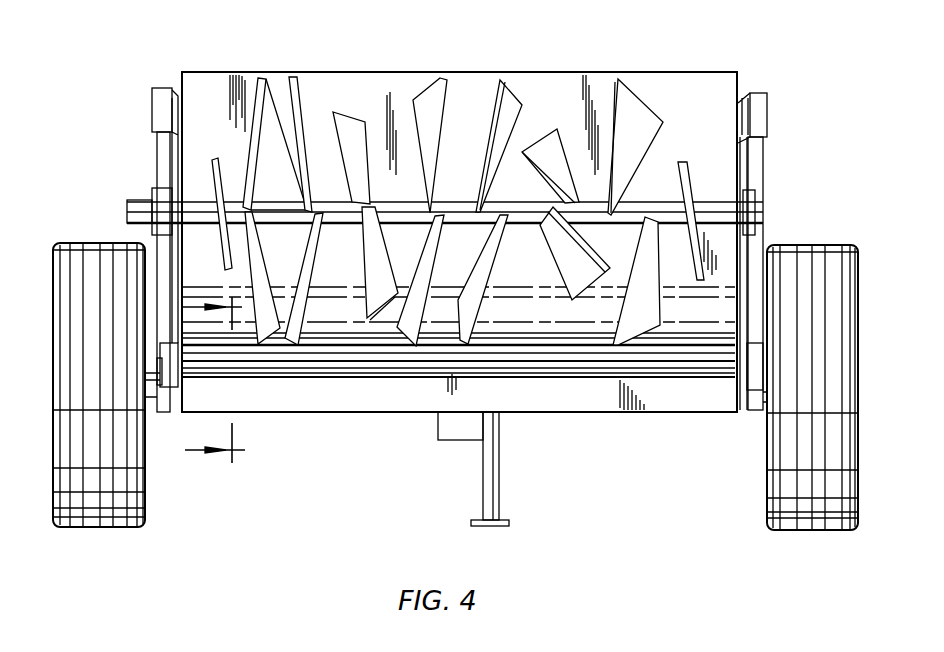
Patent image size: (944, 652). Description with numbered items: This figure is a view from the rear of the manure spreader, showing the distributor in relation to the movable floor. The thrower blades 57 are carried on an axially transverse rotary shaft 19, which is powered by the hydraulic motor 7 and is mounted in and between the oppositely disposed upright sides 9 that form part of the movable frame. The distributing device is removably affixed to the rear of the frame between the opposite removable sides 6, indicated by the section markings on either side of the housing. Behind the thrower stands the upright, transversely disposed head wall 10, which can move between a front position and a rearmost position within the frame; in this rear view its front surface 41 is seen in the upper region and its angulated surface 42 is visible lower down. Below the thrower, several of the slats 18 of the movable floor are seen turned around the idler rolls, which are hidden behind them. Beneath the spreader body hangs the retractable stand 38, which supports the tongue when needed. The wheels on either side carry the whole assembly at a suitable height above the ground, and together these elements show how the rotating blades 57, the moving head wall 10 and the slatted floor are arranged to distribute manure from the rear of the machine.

The head wall 10 is at (578, 73).
The front surface 41 is at (218, 113).
The blades 57 is at (430, 93).
The axially transverse rotary shaft 19 is at (472, 73).
The oppositely disposed sides 9 is at (207, 240).
The hydraulic motor 7 is at (140, 204).
The slats 18 is at (353, 357).
The angulated surface 42 is at (693, 330).
The retractable stand 38 is at (493, 485).
The removable sides 6 is at (214, 382).